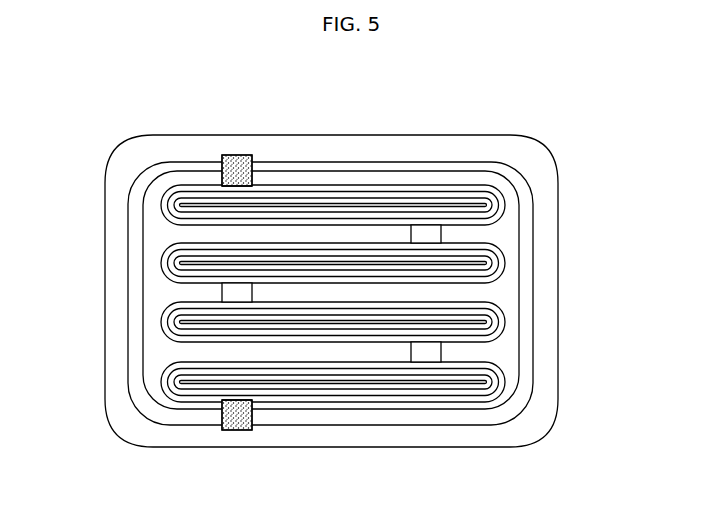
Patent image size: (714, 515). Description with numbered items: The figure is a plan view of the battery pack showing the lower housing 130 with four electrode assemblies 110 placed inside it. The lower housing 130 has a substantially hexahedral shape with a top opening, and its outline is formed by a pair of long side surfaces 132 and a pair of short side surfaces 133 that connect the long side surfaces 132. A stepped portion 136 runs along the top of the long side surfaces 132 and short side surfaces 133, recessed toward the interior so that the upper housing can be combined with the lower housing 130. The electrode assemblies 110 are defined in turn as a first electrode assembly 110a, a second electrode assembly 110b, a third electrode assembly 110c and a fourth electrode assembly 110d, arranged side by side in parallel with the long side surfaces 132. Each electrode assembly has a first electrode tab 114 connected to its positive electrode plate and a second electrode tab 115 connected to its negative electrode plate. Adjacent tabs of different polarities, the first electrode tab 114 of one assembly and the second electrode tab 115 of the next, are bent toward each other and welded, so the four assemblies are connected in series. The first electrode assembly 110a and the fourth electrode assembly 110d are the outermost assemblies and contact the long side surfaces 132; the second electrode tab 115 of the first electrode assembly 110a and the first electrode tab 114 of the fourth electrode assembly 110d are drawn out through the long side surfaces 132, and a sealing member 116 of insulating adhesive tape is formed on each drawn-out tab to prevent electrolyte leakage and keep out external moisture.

The lower housing 130 is at (323, 318).
The short side surfaces 133 is at (552, 190).
The long side surfaces 132 is at (311, 438).
The stepped portion 136 is at (121, 333).
The electrode assemblies 110 is at (426, 293).
The first electrode assembly 110a is at (399, 375).
The second electrode assembly 110b is at (505, 323).
The third electrode assembly 110c is at (505, 264).
The fourth electrode assembly 110d is at (505, 205).
The first electrode tab 114 is at (237, 155).
The second electrode tab 115 is at (237, 431).
The sealing member 116 is at (221, 184).